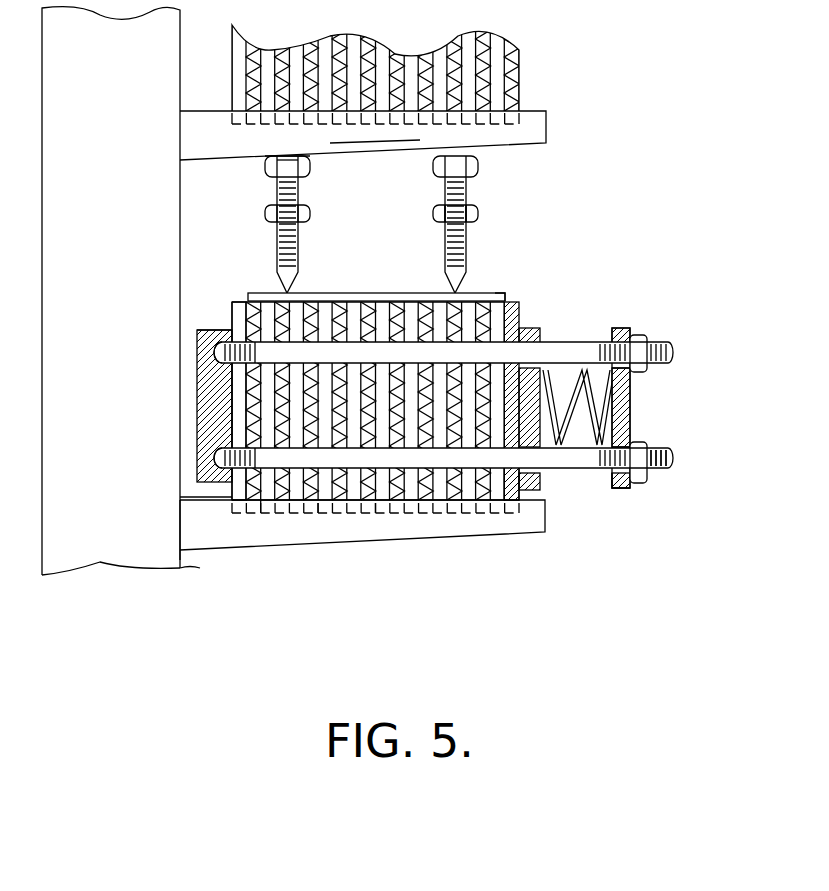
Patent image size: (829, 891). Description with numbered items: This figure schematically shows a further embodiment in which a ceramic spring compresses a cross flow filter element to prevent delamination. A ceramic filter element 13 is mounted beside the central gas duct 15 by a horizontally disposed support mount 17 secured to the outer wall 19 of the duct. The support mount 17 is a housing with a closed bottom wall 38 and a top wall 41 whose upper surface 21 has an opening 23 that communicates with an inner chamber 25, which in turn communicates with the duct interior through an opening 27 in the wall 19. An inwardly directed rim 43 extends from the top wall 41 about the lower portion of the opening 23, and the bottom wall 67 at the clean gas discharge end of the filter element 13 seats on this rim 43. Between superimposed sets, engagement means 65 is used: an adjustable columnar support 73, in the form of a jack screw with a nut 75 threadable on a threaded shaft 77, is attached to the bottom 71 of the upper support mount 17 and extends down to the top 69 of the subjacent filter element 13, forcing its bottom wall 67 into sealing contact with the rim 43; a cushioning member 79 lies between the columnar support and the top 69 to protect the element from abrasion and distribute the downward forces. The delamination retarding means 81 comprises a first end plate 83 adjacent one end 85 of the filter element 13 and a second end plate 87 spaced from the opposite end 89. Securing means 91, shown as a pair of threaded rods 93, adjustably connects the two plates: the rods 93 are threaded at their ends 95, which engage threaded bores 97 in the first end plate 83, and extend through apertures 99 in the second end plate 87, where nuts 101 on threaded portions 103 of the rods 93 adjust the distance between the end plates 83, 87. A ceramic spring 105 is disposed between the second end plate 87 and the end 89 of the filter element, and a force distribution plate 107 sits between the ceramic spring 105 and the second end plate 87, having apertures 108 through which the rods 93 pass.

The outer wall 19 is at (118, 106).
The ceramic filter element 13 is at (538, 72).
The bottom wall 67 is at (250, 124).
The support mount 17 is at (534, 153).
The adjustable columnar support 73 is at (244, 190).
The bottom 71 is at (335, 163).
The closed bottom wall 38 is at (376, 148).
The engagement means 65 is at (273, 240).
The nut 75 is at (479, 212).
The cushioning member 79 is at (352, 293).
The threaded shaft 77 is at (443, 257).
The top 69 is at (510, 297).
The opposite end 89 is at (537, 302).
The force distribution plate 107 is at (548, 340).
The delamination retarding means 81 is at (600, 311).
The apertures 99 is at (616, 331).
The threaded bores 97 is at (207, 332).
The first end plate 83 is at (200, 376).
The one end 85 is at (220, 405).
The second end plate 87 is at (598, 400).
The ceramic spring 105 is at (586, 428).
The nuts 101 is at (648, 445).
The threaded portions 103 is at (661, 472).
The securing means 91 is at (603, 498).
The threaded rods 93 is at (578, 469).
The apertures 108 is at (540, 495).
The upper surface 21 is at (518, 495).
The ends 95 is at (236, 503).
The top wall 41 is at (190, 497).
The opening 27 is at (161, 529).
The central gas duct 15 is at (181, 564).
The inwardly directed rim 43 is at (274, 505).
The inner chamber 25 is at (331, 527).
The opening 23 is at (380, 512).